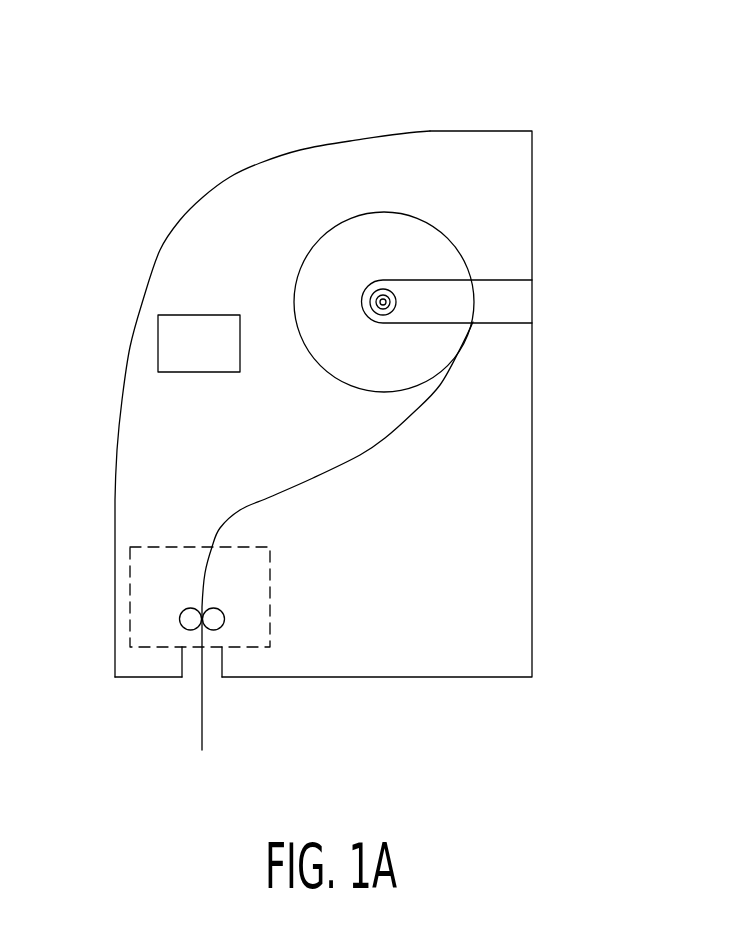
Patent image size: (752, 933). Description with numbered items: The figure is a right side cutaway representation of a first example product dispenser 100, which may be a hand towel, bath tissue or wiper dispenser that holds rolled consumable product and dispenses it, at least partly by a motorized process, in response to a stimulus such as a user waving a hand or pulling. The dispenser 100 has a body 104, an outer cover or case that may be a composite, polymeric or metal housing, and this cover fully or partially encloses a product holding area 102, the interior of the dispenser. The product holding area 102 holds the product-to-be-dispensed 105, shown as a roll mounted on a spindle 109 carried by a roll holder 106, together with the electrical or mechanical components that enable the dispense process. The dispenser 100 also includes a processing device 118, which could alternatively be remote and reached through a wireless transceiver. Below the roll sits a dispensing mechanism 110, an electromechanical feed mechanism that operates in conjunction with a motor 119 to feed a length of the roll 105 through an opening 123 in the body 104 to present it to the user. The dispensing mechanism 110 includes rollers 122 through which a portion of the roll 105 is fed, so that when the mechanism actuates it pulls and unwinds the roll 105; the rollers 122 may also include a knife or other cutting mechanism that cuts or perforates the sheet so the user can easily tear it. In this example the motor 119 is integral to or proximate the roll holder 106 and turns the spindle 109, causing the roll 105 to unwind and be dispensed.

The dispenser 100 is at (171, 100).
The product holding area 102 is at (348, 170).
The body 104 is at (140, 298).
The product-to-be-dispensed 105 is at (342, 355).
The roll holder 106 is at (523, 302).
The spindle 109 is at (389, 308).
The dispensing mechanism 110 is at (270, 598).
The processing device 118 is at (217, 356).
The motor 119 is at (390, 312).
The rollers 122 is at (178, 620).
The opening 123 is at (186, 690).